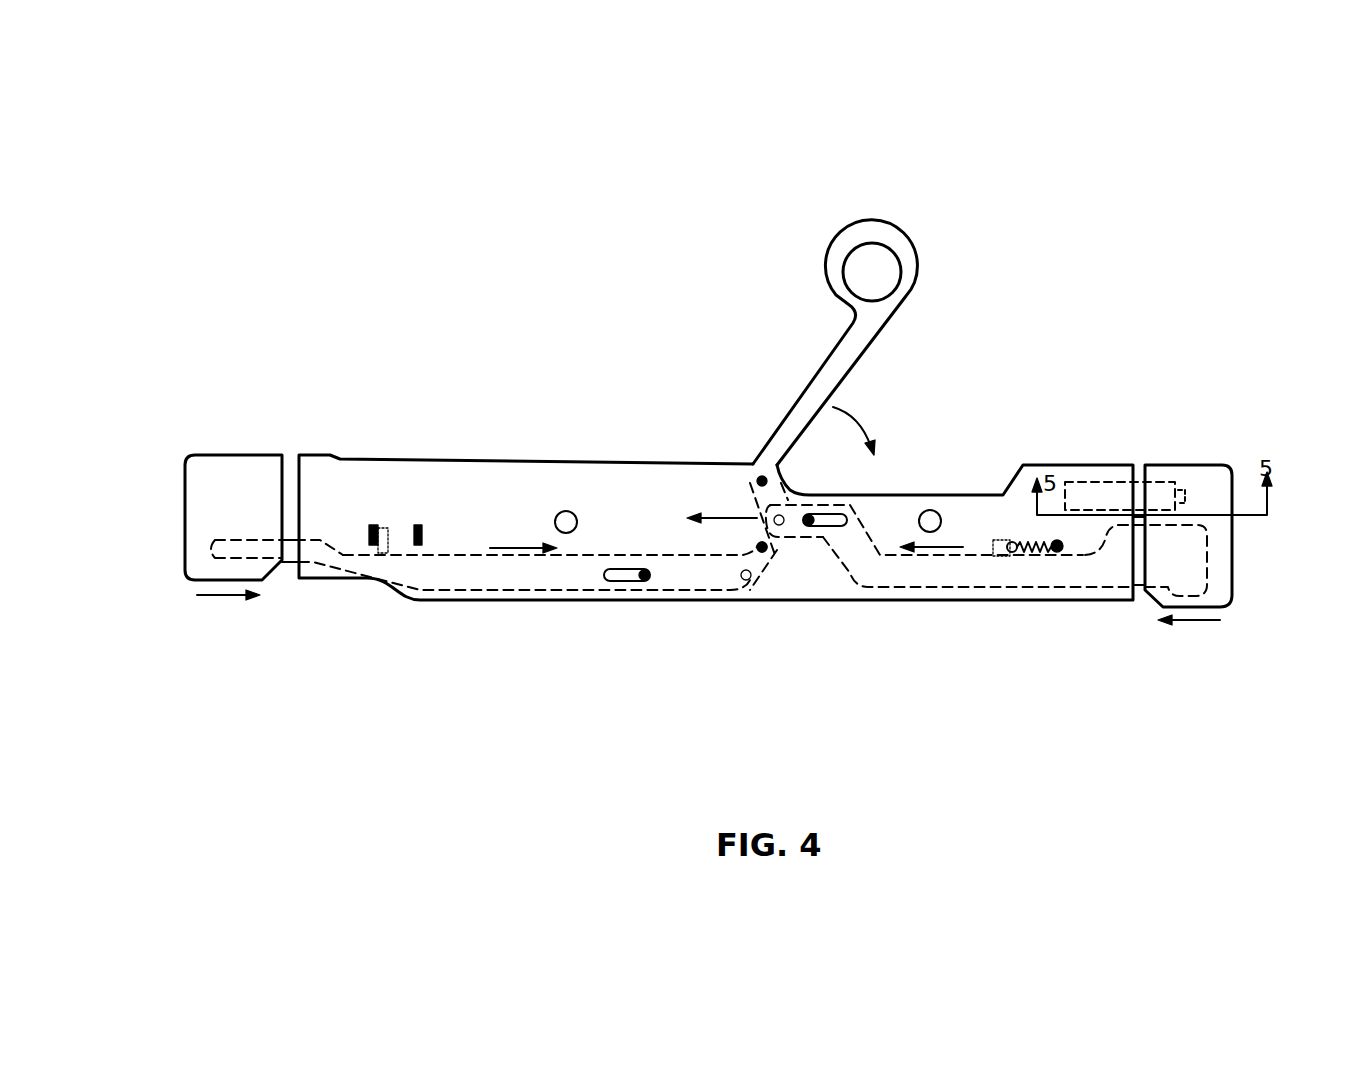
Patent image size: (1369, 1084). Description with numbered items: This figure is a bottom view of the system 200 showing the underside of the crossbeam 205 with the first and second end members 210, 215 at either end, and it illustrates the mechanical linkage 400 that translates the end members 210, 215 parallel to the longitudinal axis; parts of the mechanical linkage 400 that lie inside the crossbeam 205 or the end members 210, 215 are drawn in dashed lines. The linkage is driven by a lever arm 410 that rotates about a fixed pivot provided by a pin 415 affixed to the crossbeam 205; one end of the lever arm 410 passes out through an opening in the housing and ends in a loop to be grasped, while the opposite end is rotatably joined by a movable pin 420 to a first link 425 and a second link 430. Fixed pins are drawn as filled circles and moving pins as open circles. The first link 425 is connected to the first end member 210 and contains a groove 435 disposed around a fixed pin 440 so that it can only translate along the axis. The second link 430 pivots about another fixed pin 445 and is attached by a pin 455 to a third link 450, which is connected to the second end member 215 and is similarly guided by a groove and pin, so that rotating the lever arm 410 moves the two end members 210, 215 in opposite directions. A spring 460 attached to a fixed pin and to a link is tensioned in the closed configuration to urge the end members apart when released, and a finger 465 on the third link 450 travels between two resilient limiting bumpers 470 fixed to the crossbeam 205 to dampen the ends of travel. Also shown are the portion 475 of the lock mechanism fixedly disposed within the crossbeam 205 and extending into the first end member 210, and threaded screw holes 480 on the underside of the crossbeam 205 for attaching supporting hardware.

The system 200 is at (1132, 232).
The crossbeam 205 is at (349, 457).
The first end member 210 is at (1226, 604).
The second end member 215 is at (190, 580).
The mechanical linkage 400 is at (688, 492).
The lever arm 410 is at (846, 251).
The pin 415 is at (762, 480).
The pin 420 is at (780, 524).
The first link 425 is at (930, 573).
The second link 430 is at (752, 552).
The groove 435 is at (847, 520).
The pin 440 is at (811, 524).
The pin 445 is at (764, 551).
The third link 450 is at (465, 572).
The pin 455 is at (746, 581).
The spring 460 is at (1013, 543).
The finger 465 is at (378, 548).
The limiting bumpers 470 is at (418, 525).
The portion of the lock mechanism 475 is at (1086, 487).
The threaded screw holes 480 is at (556, 516).